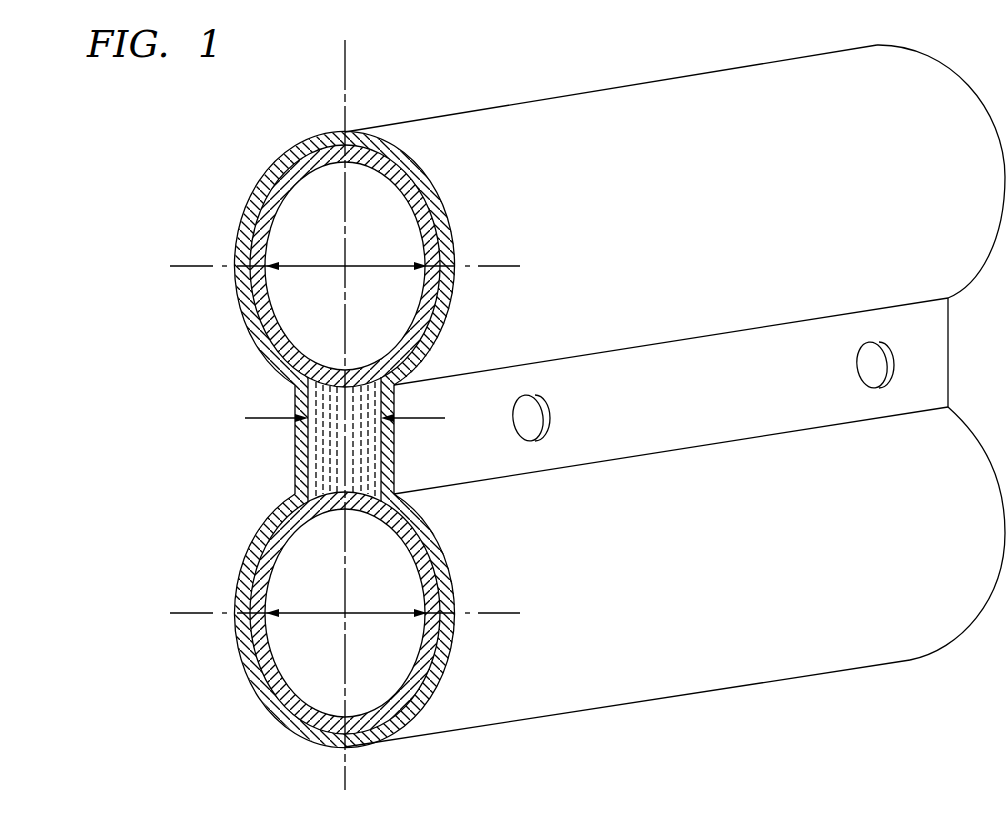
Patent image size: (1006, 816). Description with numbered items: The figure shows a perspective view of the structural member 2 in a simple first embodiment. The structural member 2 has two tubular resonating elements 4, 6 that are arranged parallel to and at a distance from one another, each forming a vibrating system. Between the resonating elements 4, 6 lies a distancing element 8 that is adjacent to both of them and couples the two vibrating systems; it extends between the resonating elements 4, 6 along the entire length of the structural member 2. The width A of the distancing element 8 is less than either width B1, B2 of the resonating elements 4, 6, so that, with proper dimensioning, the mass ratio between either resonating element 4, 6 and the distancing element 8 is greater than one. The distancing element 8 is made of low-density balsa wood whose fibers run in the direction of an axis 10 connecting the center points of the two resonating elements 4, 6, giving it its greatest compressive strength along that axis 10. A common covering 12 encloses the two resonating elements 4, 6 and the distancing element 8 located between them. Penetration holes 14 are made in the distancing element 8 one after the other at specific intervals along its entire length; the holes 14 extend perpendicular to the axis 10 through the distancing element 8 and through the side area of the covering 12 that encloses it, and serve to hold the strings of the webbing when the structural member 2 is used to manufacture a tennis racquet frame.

The structural member 2 is at (652, 58).
The tubular resonating element 4 is at (257, 655).
The tubular resonating element 6 is at (258, 306).
The distancing element 8 is at (318, 449).
The axis 10 is at (345, 76).
The common covering 12 is at (268, 360).
The penetration holes 14 is at (550, 413).
The width of the distancing element A is at (345, 406).
The width of the resonating element B1 is at (345, 248).
The width of the resonating element B2 is at (345, 595).